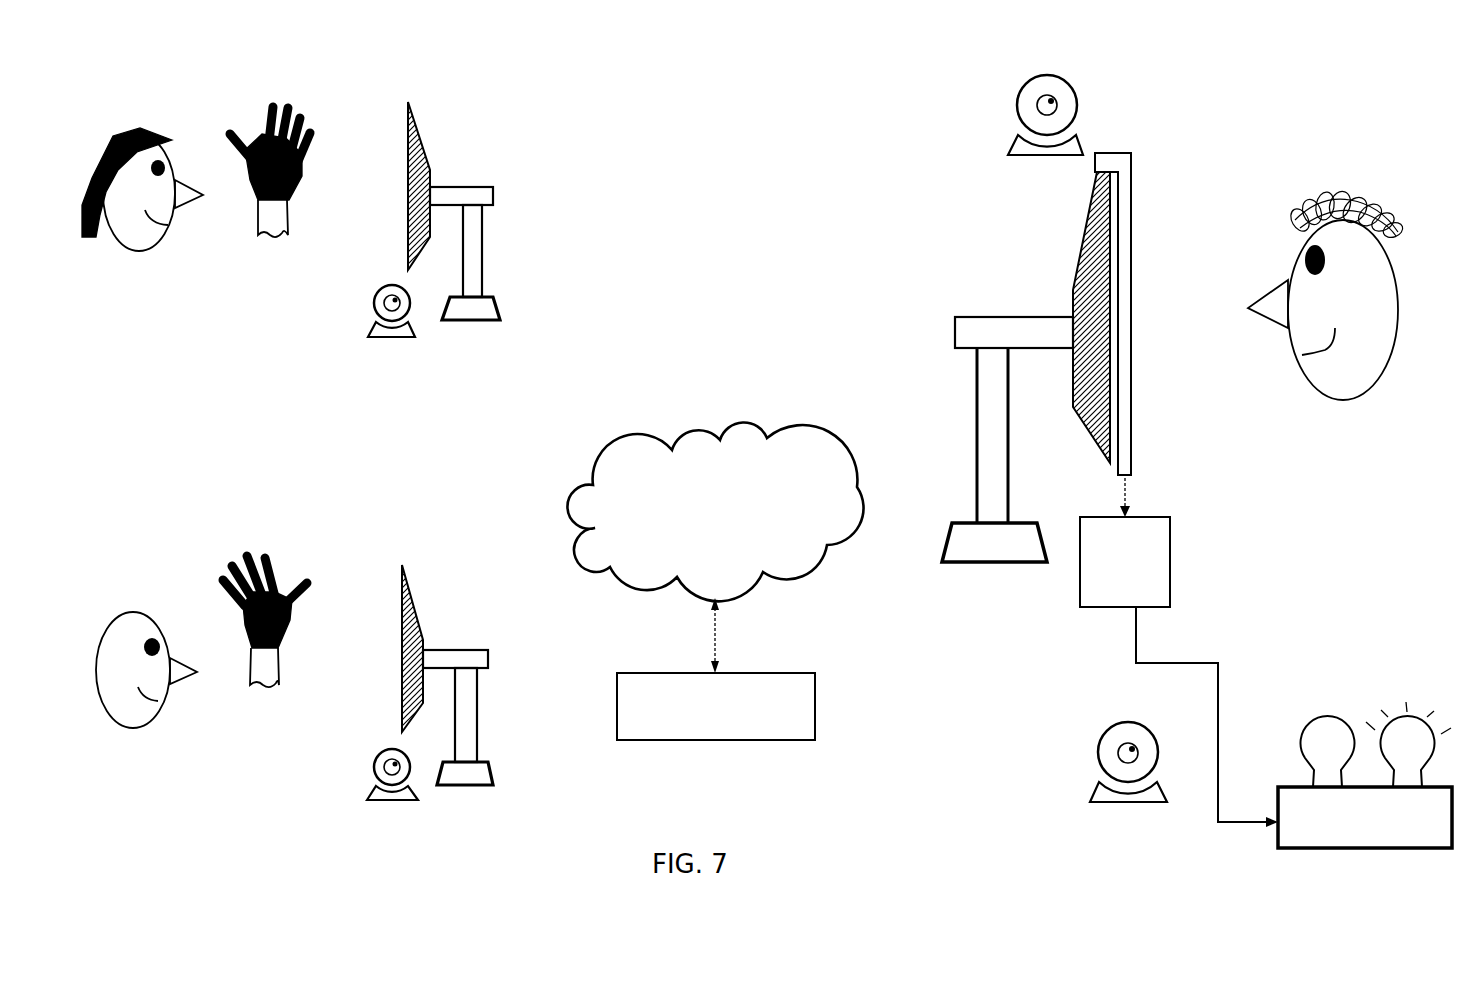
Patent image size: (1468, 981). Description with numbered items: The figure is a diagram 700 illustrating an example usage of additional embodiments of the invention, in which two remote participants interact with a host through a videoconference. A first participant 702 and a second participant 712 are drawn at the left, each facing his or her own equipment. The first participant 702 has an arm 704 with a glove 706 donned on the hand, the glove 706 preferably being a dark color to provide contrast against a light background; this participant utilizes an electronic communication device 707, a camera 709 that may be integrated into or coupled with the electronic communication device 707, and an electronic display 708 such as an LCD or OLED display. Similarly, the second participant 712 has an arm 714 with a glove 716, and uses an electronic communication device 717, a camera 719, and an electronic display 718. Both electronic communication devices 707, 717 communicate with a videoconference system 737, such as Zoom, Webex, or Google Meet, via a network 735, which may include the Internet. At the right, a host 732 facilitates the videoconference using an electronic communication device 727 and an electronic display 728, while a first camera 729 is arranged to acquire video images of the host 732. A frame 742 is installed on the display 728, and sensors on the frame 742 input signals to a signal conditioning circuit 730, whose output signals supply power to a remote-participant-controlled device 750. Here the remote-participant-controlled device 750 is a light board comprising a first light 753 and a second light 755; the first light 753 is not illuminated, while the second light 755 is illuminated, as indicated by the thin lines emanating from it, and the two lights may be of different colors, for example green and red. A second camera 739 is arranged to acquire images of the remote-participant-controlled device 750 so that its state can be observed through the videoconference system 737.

The diagram 700 is at (1306, 125).
The first participant 702 is at (140, 237).
The arm 704 is at (278, 214).
The glove 706 is at (300, 150).
The electronic communication device 707 is at (490, 308).
The electronic display 708 is at (418, 148).
The camera 709 is at (385, 303).
The second participant 712 is at (133, 718).
The arm 714 is at (270, 663).
The glove 716 is at (295, 598).
The electronic communication device 717 is at (485, 773).
The electronic display 718 is at (415, 613).
The camera 719 is at (380, 769).
The electronic communication device 727 is at (975, 548).
The electronic display 728 is at (1085, 225).
The first camera 729 is at (1027, 112).
The signal conditioning circuit 730 is at (1109, 578).
The host 732 is at (1330, 382).
The network 735 is at (735, 433).
The videoconference system 737 is at (790, 683).
The second camera 739 is at (1105, 760).
The frame 742 is at (1122, 292).
The remote-participant-controlled device 750 is at (1322, 830).
The first light 753 is at (1310, 745).
The second light 755 is at (1410, 777).